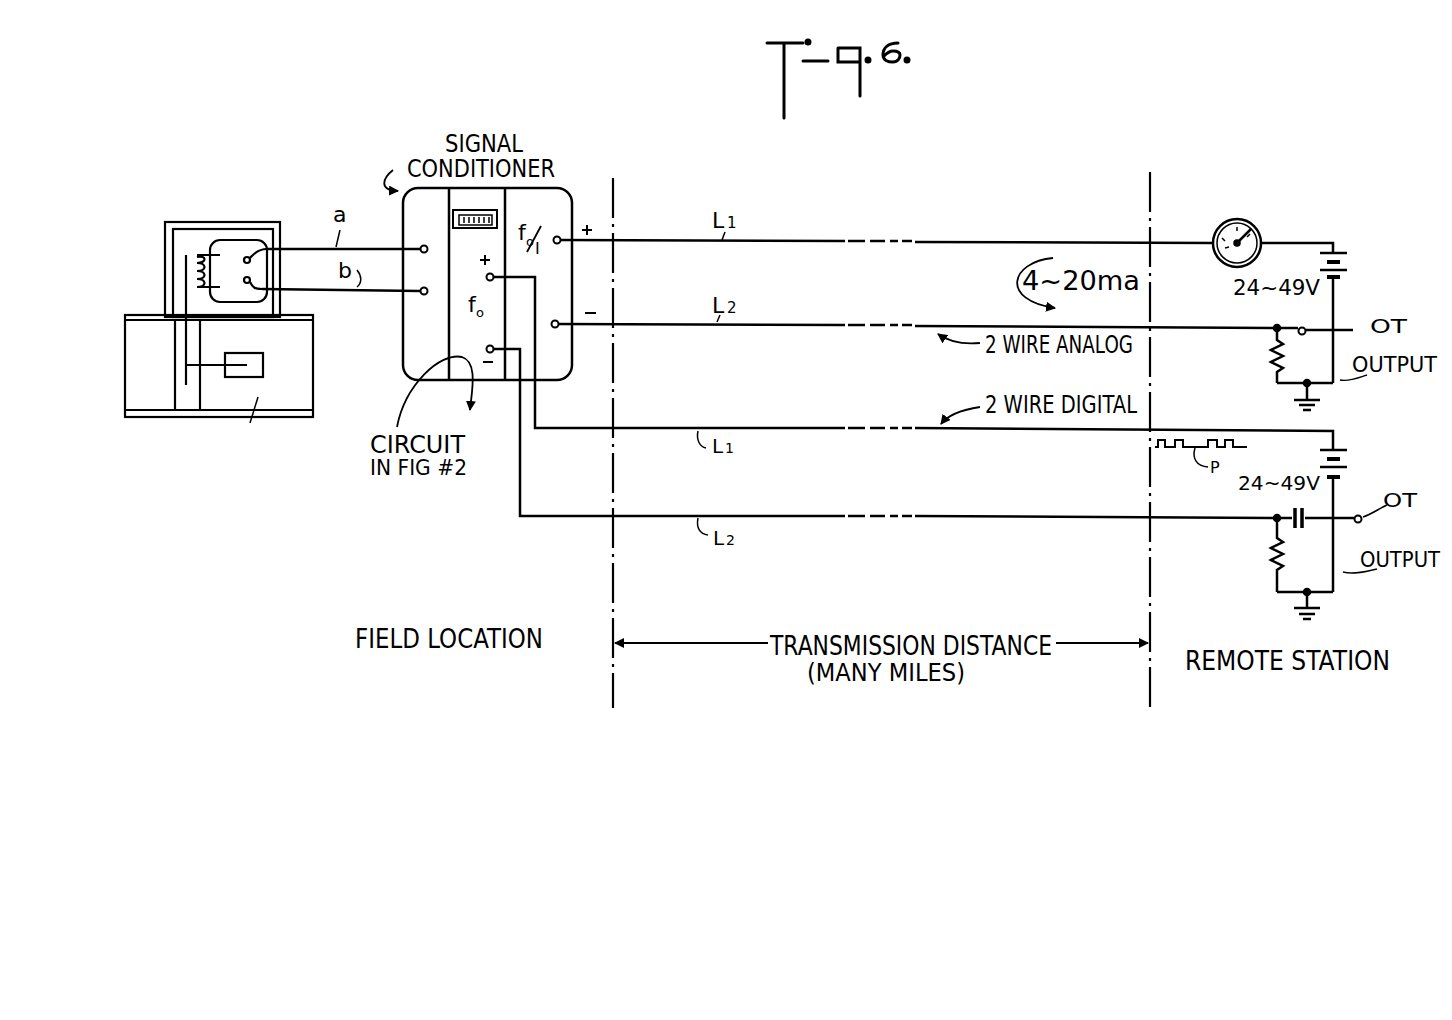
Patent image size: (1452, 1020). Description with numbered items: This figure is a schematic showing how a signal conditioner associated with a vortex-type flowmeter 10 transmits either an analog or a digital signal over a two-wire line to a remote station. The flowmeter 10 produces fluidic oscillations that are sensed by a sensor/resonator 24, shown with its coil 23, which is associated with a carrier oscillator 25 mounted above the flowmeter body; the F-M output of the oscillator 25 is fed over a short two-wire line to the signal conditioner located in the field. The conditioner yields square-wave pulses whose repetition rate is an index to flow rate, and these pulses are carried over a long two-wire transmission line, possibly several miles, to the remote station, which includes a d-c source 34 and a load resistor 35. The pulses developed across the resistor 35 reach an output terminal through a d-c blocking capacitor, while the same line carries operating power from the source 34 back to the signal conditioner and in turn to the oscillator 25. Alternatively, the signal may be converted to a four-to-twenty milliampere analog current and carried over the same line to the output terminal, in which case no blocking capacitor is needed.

The flowmeter 10 is at (300, 322).
The coil 23 is at (183, 267).
The sensor/resonator 24 is at (202, 252).
The carrier oscillator 25 is at (235, 245).
The d-c source 34 is at (1345, 278).
The load resistor 35 is at (1277, 363).